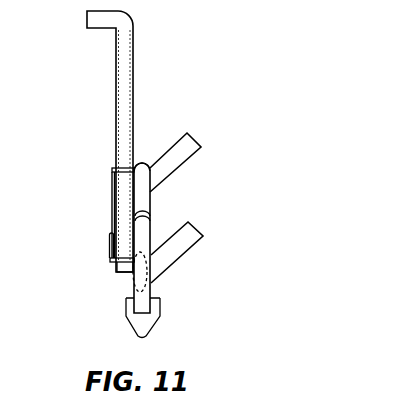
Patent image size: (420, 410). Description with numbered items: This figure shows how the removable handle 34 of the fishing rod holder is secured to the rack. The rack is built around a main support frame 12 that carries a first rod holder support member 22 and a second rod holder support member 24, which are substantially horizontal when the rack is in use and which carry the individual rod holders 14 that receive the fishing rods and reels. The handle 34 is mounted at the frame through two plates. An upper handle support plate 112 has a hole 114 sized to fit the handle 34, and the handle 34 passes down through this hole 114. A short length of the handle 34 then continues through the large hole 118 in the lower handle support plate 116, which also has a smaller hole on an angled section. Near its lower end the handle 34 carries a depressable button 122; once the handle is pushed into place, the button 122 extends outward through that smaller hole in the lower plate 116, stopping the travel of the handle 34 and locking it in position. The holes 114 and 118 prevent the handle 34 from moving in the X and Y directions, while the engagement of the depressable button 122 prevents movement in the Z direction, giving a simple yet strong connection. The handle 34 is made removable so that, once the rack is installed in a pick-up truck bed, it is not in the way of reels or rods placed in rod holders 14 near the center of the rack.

The main support frame 12 is at (147, 200).
The rod holder 14 is at (197, 142).
The first rod holder support member 22 is at (146, 163).
The second rod holder support member 24 is at (133, 297).
The removable handle 34 is at (132, 96).
The upper handle support plate 112 is at (112, 170).
The hole 114 is at (122, 166).
The lower handle support plate 116 is at (112, 254).
The large hole 118 is at (124, 270).
The depressable button 122 is at (108, 240).